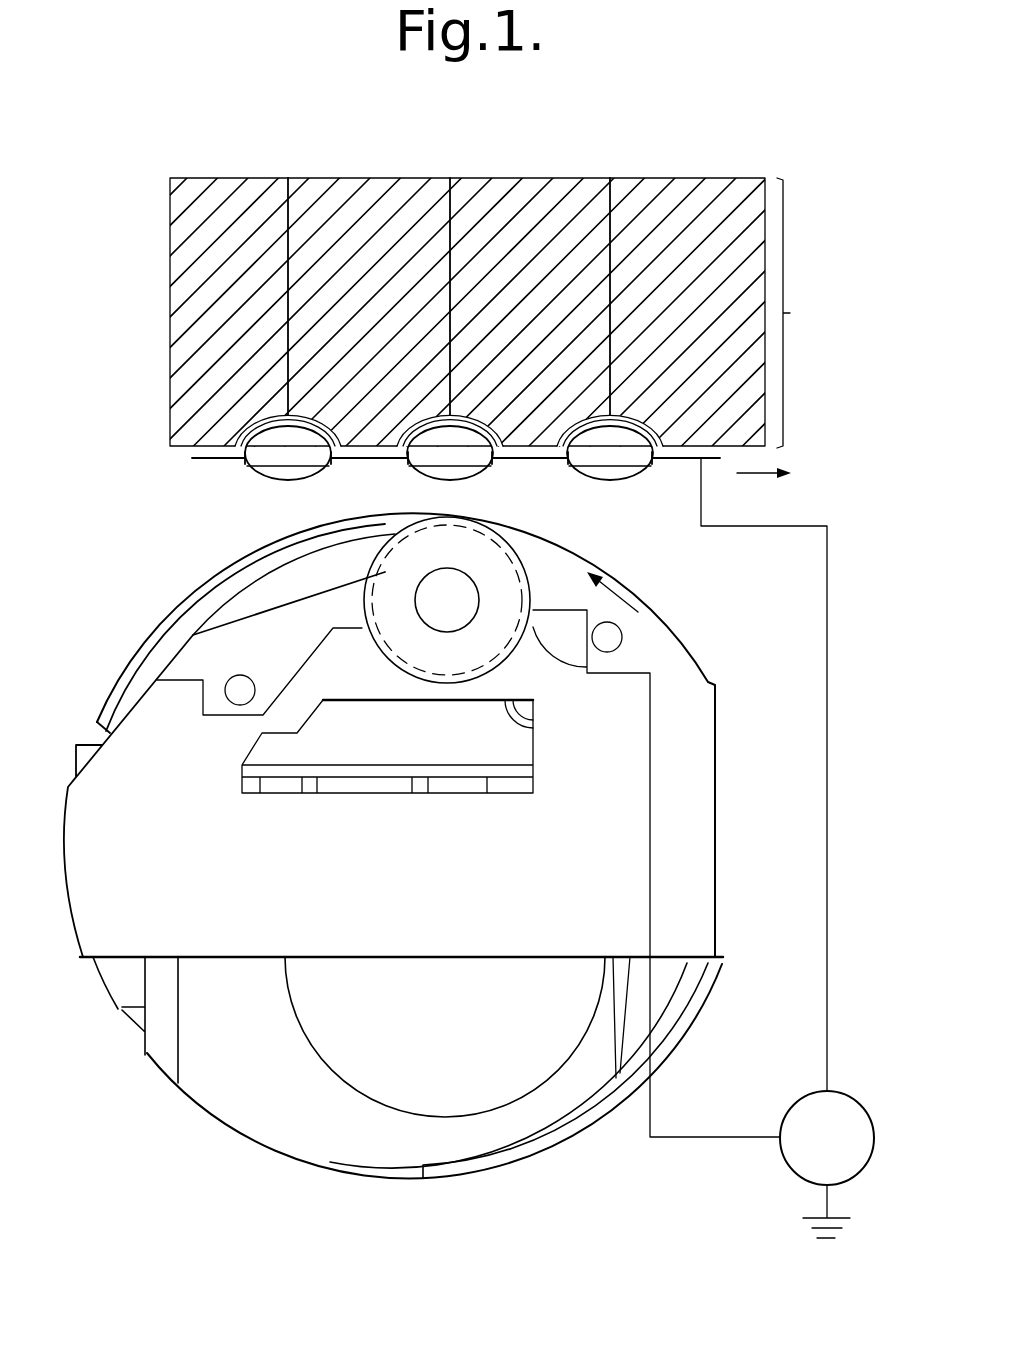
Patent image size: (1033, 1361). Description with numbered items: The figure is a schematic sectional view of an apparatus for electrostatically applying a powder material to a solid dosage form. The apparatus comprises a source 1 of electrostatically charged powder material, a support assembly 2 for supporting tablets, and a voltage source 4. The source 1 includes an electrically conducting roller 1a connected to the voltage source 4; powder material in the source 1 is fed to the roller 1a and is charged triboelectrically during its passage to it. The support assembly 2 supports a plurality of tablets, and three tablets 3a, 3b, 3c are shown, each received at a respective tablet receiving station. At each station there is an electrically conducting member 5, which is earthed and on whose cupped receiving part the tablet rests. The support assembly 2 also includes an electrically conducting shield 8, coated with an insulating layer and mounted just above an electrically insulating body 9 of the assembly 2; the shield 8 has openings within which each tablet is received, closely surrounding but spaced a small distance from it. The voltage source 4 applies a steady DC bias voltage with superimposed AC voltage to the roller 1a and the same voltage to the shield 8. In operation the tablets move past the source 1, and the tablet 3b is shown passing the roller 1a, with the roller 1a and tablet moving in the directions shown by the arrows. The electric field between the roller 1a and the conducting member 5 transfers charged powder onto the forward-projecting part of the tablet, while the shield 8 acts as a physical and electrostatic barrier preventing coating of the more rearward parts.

The source of electrostatically charged powder material 1 is at (240, 598).
The roller 1a is at (265, 545).
The support assembly 2 is at (505, 319).
The tablet 3a is at (278, 478).
The tablet 3b is at (465, 470).
The tablet 3c is at (620, 478).
The voltage source 4 is at (797, 1155).
The electrically conducting member 5 is at (452, 176).
The electrically conducting shield 8 is at (196, 460).
The electrically insulating body 9 is at (213, 287).